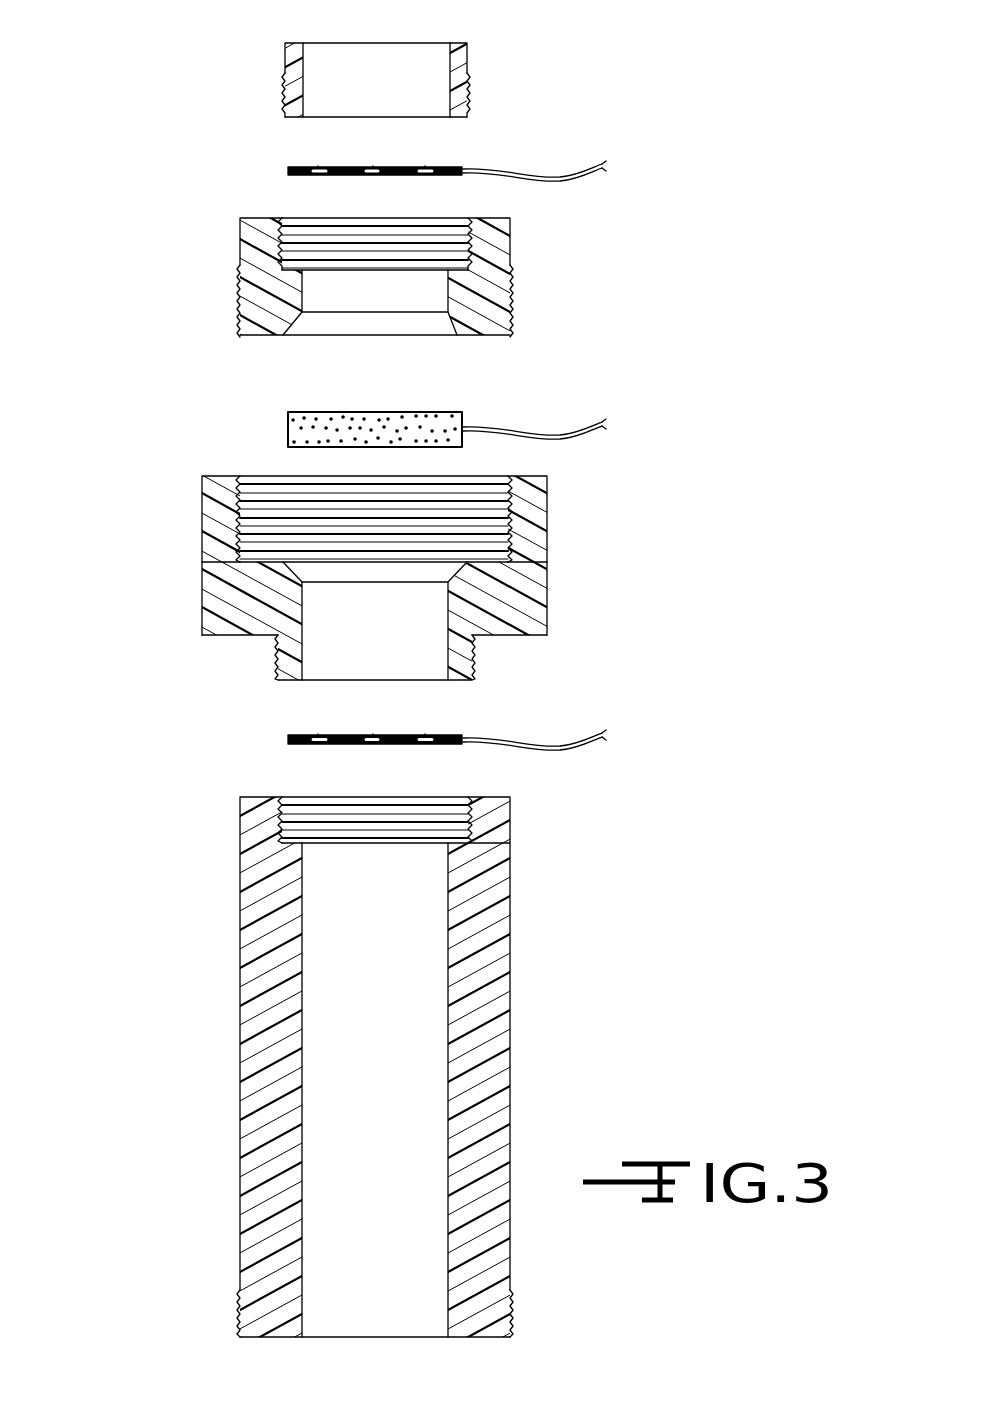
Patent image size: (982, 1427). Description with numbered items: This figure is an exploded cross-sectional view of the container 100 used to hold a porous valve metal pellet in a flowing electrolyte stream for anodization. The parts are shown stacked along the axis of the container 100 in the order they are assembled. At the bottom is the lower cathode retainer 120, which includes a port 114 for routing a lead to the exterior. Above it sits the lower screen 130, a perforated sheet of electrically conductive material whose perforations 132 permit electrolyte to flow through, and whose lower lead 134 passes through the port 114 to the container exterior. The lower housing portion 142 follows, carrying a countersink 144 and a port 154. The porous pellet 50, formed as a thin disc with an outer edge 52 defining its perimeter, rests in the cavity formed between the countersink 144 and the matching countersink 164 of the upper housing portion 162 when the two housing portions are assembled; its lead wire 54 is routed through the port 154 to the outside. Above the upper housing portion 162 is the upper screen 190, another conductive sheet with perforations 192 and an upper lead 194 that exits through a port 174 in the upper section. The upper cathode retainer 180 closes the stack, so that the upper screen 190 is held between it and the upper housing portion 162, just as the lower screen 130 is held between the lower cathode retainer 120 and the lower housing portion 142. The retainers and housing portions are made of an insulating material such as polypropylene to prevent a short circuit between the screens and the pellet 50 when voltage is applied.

The container 100 is at (522, 108).
The upper cathode retainer 180 is at (285, 60).
The upper screen 190 is at (414, 167).
The perforations 192 is at (320, 167).
The upper lead 194 is at (565, 180).
The upper housing portion 162 is at (375, 275).
The port 174 is at (510, 250).
The countersink 164 is at (457, 318).
The porous pellet 50 is at (413, 420).
The outer edge 52 is at (288, 430).
The lead wire 54 is at (580, 432).
The lower housing portion 142 is at (361, 570).
The port 154 is at (525, 547).
The countersink 144 is at (457, 566).
The lower screen 130 is at (367, 751).
The perforation 132 is at (318, 735).
The lower lead 134 is at (537, 750).
The lower cathode retainer 120 is at (341, 1037).
The port 114 is at (480, 843).